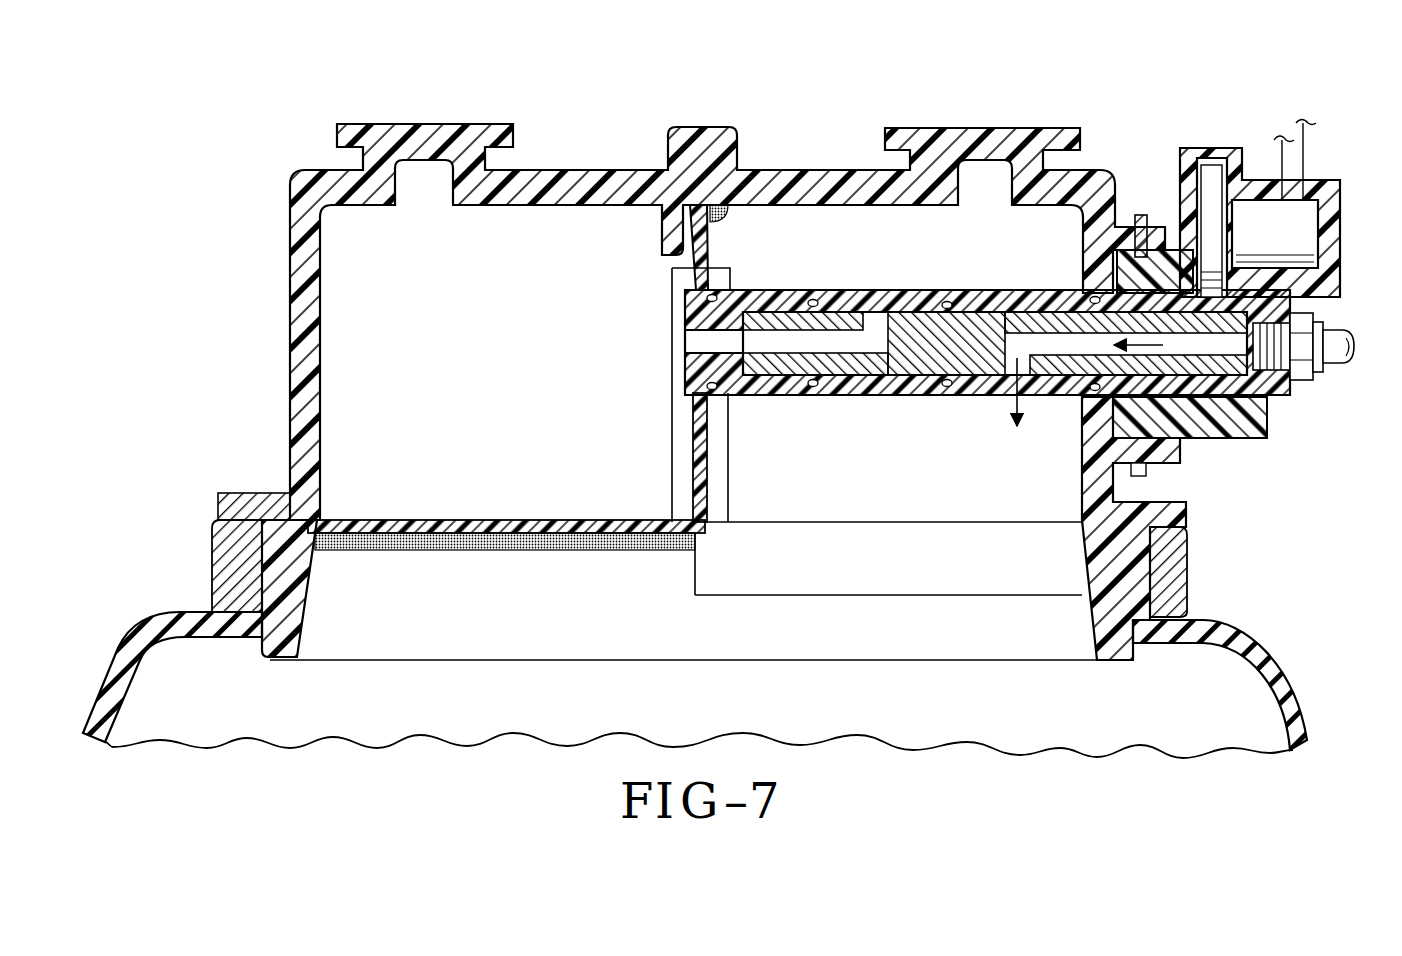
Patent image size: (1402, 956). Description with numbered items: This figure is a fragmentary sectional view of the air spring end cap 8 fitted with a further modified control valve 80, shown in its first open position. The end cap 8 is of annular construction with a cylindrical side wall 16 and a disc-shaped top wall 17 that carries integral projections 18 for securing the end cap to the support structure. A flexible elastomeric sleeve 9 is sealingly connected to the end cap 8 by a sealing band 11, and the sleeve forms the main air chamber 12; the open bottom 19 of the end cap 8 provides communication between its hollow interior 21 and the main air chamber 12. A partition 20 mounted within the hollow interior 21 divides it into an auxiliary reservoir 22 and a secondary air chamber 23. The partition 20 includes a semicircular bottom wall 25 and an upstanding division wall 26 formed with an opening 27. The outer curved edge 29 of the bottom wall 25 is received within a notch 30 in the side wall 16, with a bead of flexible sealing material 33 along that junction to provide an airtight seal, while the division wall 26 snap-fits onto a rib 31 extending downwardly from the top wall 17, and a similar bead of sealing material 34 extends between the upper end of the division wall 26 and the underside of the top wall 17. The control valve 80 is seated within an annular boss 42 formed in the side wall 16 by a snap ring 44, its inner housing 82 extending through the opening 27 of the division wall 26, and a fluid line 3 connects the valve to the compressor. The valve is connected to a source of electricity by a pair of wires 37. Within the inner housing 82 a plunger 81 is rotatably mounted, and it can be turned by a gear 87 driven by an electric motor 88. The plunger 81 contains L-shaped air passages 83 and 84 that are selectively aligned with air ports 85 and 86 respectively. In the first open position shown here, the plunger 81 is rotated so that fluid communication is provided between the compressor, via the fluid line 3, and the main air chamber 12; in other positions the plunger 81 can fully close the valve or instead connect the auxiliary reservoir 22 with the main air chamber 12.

The fluid line 3 is at (1338, 336).
The end cap 8 is at (286, 228).
The flexible elastomeric sleeve 9 is at (1298, 690).
The sealing band 11 is at (216, 555).
The main air chamber 12 is at (1210, 710).
The cylindrical side wall 16 is at (298, 282).
The top wall 17 is at (577, 170).
The projections 18 is at (415, 130).
The open bottom 19 is at (352, 638).
The partition 20 is at (505, 540).
The hollow interior 21 is at (362, 341).
The auxiliary reservoir 22 is at (372, 380).
The secondary air chamber 23 is at (851, 253).
The bottom wall 25 is at (385, 530).
The division wall 26 is at (704, 488).
The opening 27 is at (694, 372).
The outer curved edge 29 is at (318, 520).
The notch 30 is at (302, 522).
The rib 31 is at (672, 232).
The bead of flexible sealing material 33 is at (442, 548).
The bead of sealing material 34 is at (722, 218).
The wires 37 is at (1305, 150).
The annular boss 42 is at (1160, 462).
The snap ring 44 is at (1142, 215).
The modified control valve 80 is at (837, 398).
The plunger 81 is at (925, 312).
The inner housing 82 is at (897, 300).
The L-shaped air passage 83 is at (787, 342).
The L-shaped air passage 84 is at (1072, 345).
The air port 85 is at (876, 393).
The air port 86 is at (1007, 404).
The gear 87 is at (1212, 178).
The electric motor 88 is at (1300, 232).